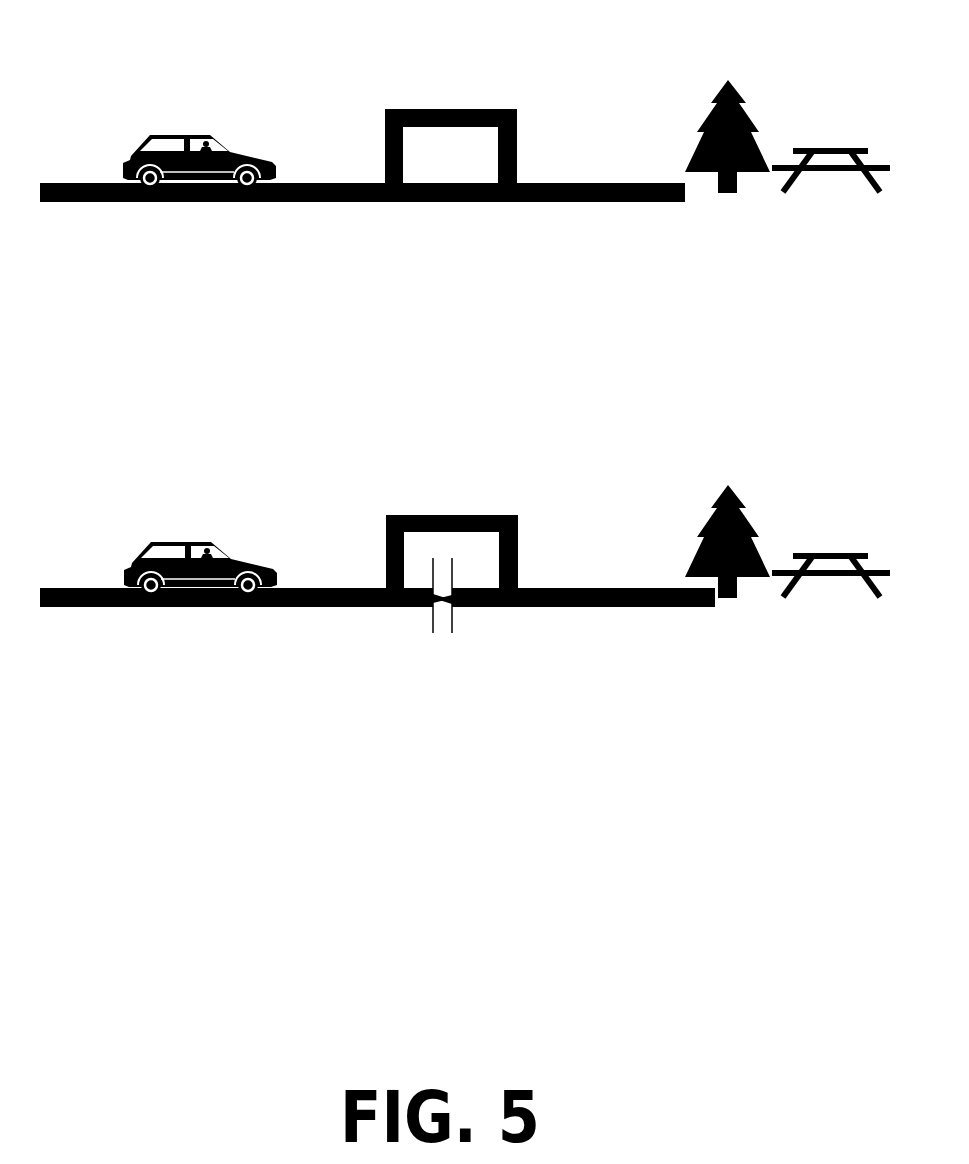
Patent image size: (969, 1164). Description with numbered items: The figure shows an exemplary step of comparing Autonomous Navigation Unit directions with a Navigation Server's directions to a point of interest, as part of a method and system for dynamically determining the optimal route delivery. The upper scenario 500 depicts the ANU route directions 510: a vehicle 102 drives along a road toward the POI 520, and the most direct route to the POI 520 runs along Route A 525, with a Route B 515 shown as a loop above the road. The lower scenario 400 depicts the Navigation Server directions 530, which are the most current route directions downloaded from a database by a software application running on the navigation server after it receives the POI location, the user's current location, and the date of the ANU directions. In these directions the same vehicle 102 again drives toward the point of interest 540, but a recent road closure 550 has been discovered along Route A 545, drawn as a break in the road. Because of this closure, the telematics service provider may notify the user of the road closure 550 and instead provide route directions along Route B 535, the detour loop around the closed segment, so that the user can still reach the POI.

The vehicle 102 is at (132, 153).
The ANU directions scenario 500 is at (128, 59).
The ANU route directions 510 is at (553, 117).
The Route B 515 is at (433, 80).
The Route A 525 is at (443, 242).
The POI 520 is at (778, 255).
The navigation server directions scenario 400 is at (127, 466).
The route (navigation server directions) 530 is at (565, 533).
The Route B 535 is at (428, 487).
The Route A 545 is at (510, 643).
The point of interest 540 is at (780, 660).
The road closure 550 is at (443, 558).